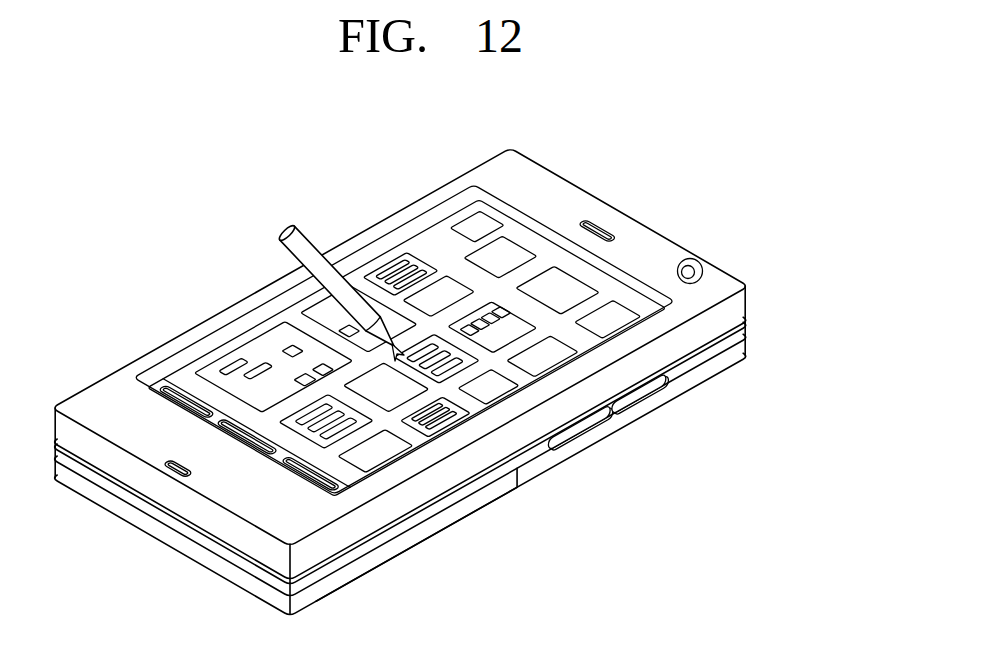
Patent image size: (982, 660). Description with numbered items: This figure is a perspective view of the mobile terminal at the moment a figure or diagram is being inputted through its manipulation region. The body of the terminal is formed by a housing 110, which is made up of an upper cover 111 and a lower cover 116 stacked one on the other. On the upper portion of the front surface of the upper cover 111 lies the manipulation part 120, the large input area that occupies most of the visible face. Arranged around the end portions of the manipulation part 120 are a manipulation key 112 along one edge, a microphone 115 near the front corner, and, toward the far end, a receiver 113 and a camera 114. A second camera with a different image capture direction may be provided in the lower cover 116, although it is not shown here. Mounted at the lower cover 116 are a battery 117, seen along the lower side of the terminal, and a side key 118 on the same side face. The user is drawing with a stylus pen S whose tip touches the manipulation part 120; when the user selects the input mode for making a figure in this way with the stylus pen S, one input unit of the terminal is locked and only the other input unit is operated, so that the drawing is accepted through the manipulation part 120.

The housing 110 is at (449, 382).
The upper cover 111 is at (742, 304).
The lower cover 116 is at (742, 341).
The manipulation key 112 is at (166, 386).
The receiver 113 is at (608, 228).
The camera 114 is at (700, 271).
The microphone 115 is at (177, 469).
The battery 117 is at (420, 528).
The side key 118 is at (578, 433).
The manipulation part 120 is at (455, 221).
The stylus pen S is at (295, 247).